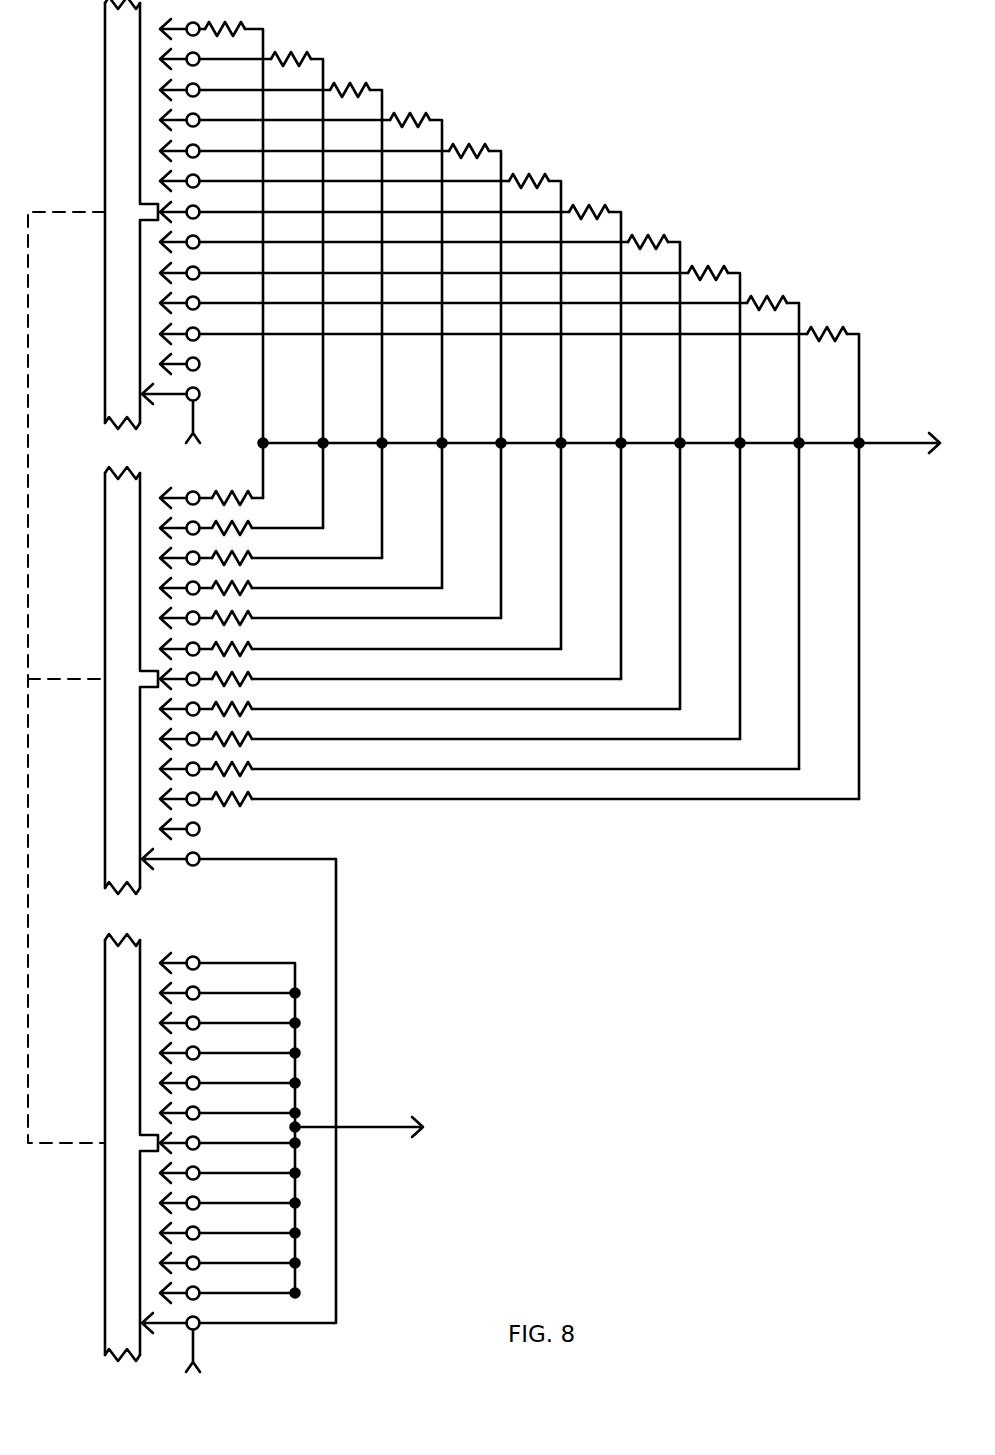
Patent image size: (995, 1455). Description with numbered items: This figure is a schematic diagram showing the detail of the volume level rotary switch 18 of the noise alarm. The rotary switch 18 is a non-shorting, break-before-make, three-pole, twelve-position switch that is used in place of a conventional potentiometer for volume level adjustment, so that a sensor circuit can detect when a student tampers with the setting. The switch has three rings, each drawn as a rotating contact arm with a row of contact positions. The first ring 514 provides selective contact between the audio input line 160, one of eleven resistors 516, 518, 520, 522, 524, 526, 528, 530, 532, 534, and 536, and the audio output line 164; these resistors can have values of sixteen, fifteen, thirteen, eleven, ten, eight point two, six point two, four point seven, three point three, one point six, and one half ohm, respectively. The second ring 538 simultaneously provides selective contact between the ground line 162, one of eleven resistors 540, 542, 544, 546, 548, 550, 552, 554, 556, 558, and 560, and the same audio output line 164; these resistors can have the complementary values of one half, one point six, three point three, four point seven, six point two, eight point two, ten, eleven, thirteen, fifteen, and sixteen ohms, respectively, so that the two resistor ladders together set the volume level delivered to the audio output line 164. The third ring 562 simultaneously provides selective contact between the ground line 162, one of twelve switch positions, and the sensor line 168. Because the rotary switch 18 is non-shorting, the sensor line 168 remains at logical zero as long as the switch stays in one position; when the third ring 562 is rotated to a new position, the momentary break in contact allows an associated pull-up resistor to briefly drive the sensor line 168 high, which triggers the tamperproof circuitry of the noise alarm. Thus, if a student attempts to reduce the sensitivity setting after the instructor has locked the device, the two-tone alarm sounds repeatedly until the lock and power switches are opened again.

The rotary switch 18 is at (484, 686).
The first ring 514 is at (105, 90).
The resistor 516 is at (247, 24).
The resistor 518 is at (313, 53).
The resistor 520 is at (372, 84).
The resistor 522 is at (432, 114).
The resistor 524 is at (491, 145).
The resistor 526 is at (551, 175).
The resistor 528 is at (611, 206).
The resistor 530 is at (670, 236).
The resistor 532 is at (730, 267).
The resistor 534 is at (789, 297).
The resistor 536 is at (849, 328).
The second ring 538 is at (105, 578).
The resistor 540 is at (248, 501).
The resistor 542 is at (248, 531).
The resistor 544 is at (248, 561).
The resistor 546 is at (248, 591).
The resistor 548 is at (248, 621).
The resistor 550 is at (248, 652).
The resistor 552 is at (248, 682).
The resistor 554 is at (248, 712).
The resistor 556 is at (248, 742).
The resistor 558 is at (248, 772).
The resistor 560 is at (248, 802).
The third ring 562 is at (107, 1022).
The audio input line 160 is at (196, 404).
The ground line 162 is at (237, 862).
The audio output line 164 is at (871, 441).
The sensor line 168 is at (350, 1126).